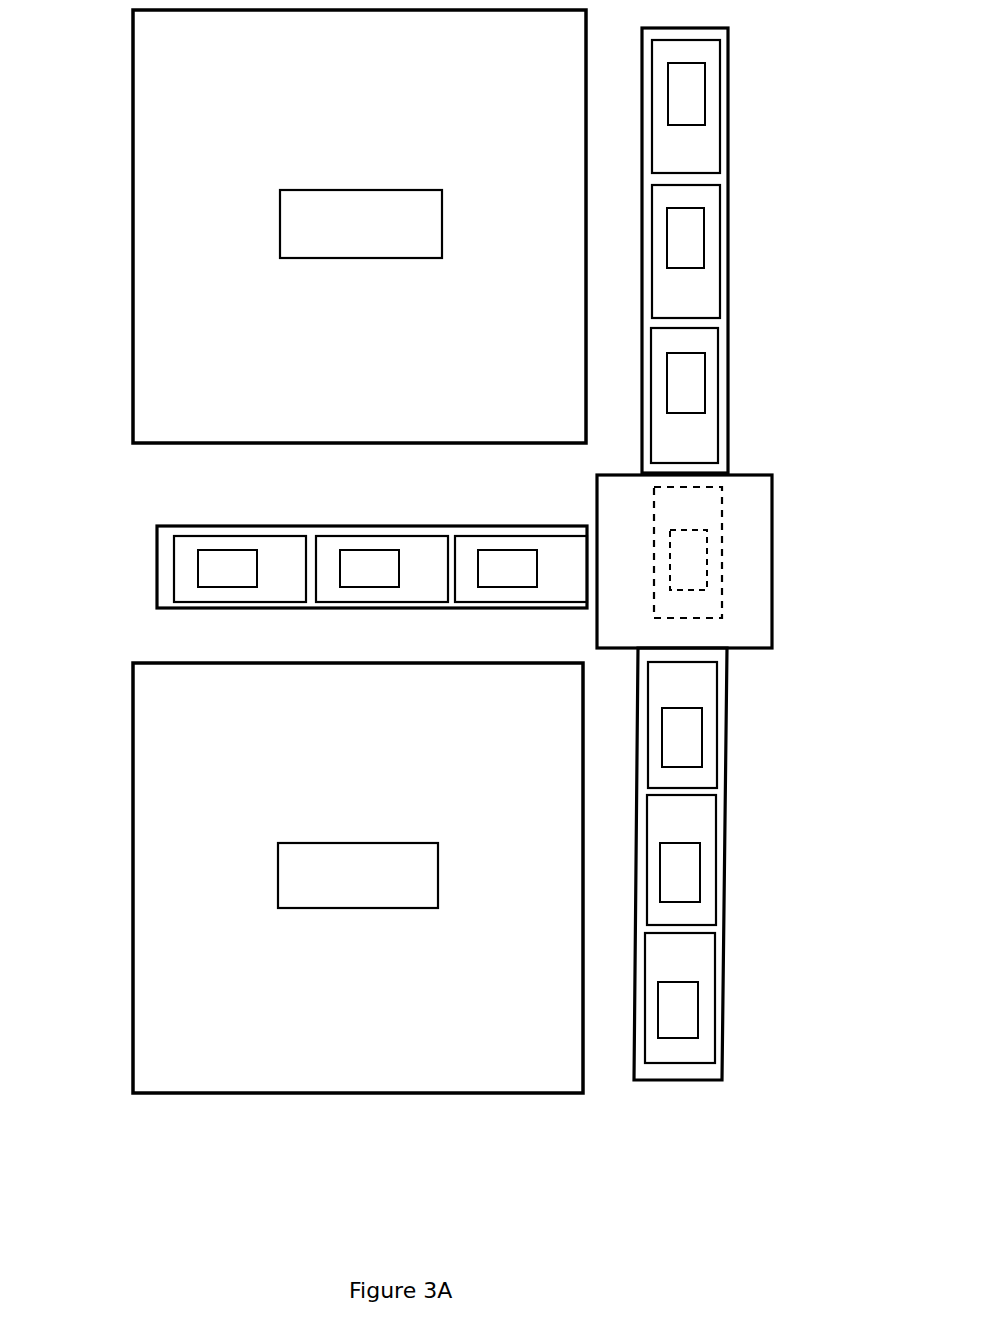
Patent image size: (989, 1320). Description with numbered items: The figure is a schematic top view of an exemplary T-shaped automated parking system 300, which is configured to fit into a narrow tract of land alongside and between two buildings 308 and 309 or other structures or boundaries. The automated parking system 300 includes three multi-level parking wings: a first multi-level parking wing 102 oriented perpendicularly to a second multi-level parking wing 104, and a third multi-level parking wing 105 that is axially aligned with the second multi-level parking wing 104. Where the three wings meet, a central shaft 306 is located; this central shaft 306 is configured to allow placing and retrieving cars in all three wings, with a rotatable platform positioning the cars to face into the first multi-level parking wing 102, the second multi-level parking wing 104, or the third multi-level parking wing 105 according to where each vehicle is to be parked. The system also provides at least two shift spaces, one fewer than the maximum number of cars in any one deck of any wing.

The T-shaped automated parking system 300 is at (756, 282).
The first multi-level parking wing 102 is at (355, 526).
The second multi-level parking wing 104 is at (729, 369).
The third multi-level parking wing 105 is at (725, 814).
The central shaft 306 is at (773, 562).
The building 308 is at (483, 446).
The building 309 is at (128, 763).